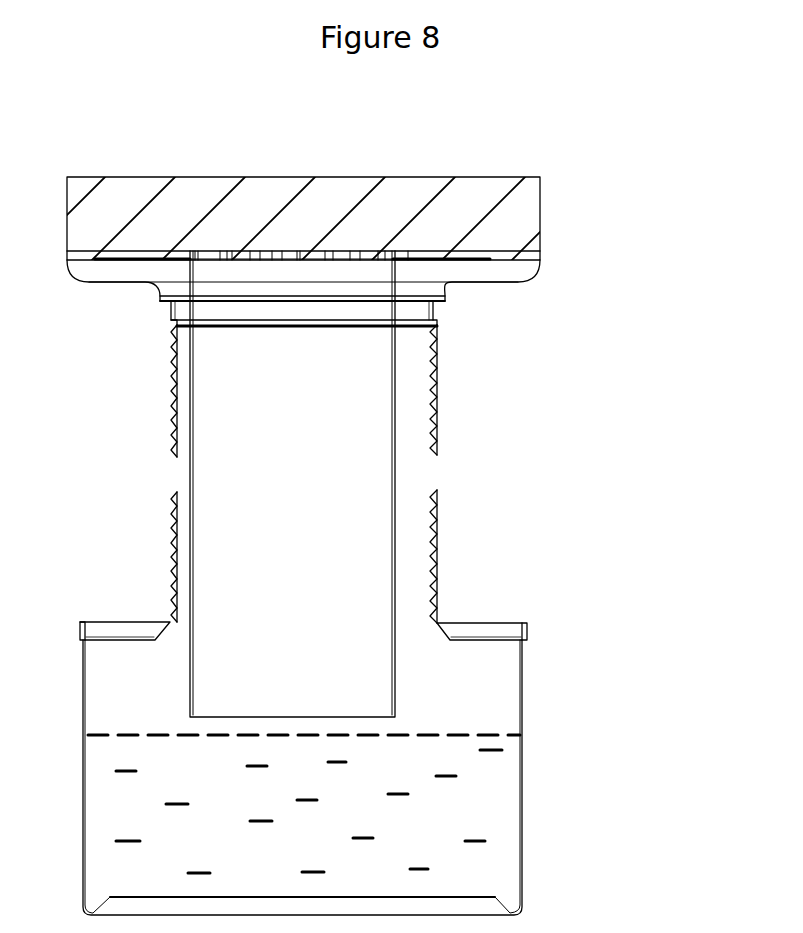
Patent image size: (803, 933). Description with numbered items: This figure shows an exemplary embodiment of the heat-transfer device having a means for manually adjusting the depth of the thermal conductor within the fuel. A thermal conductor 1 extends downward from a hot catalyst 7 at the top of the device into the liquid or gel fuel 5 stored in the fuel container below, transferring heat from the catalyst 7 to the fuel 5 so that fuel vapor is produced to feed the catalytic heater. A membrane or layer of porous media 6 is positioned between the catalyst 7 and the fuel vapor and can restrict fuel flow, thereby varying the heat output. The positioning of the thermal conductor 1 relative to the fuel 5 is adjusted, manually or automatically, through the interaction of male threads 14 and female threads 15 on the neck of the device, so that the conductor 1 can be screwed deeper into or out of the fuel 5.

The catalyst 7 is at (481, 175).
The porous media 6 is at (453, 262).
The thermal conductor 1 is at (398, 460).
The male threads 14 is at (165, 375).
The female threads 15 is at (171, 540).
The liquid or gel fuel 5 is at (493, 754).